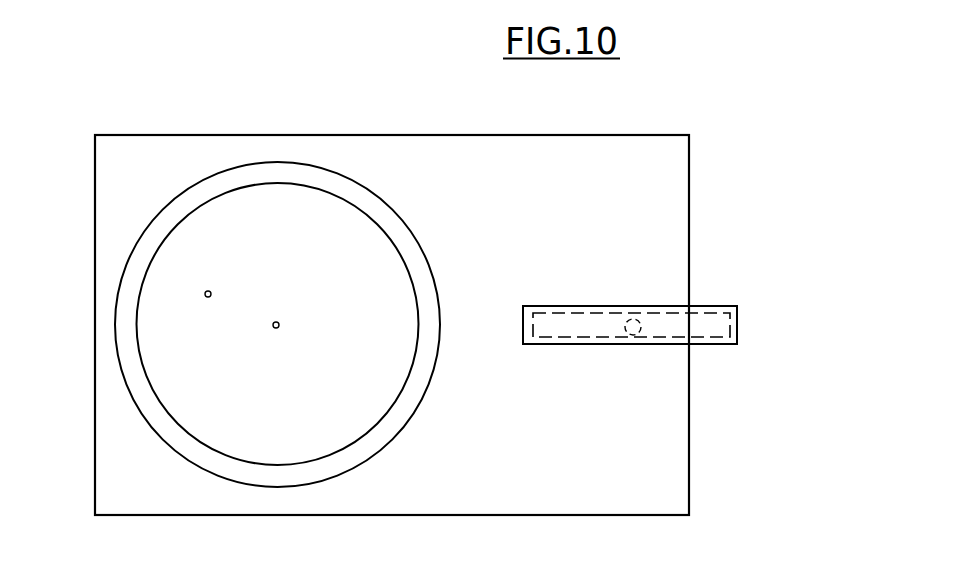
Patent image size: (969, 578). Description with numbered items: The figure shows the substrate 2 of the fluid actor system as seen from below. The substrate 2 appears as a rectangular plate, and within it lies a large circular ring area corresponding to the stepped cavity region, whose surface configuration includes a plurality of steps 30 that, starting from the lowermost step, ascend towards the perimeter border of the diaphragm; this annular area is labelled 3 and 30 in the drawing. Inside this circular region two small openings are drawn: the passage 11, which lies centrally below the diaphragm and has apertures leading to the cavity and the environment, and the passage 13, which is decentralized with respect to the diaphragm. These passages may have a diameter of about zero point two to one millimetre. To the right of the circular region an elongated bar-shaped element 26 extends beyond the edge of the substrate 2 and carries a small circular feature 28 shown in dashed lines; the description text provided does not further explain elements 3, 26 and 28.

The substrate 2 is at (113, 163).
The annular ring 3 is at (222, 324).
The step 30 is at (122, 365).
The passage 13 is at (208, 297).
The passage 11 is at (276, 328).
The bar / slide element 26 is at (564, 346).
The pin / opening 28 is at (640, 334).